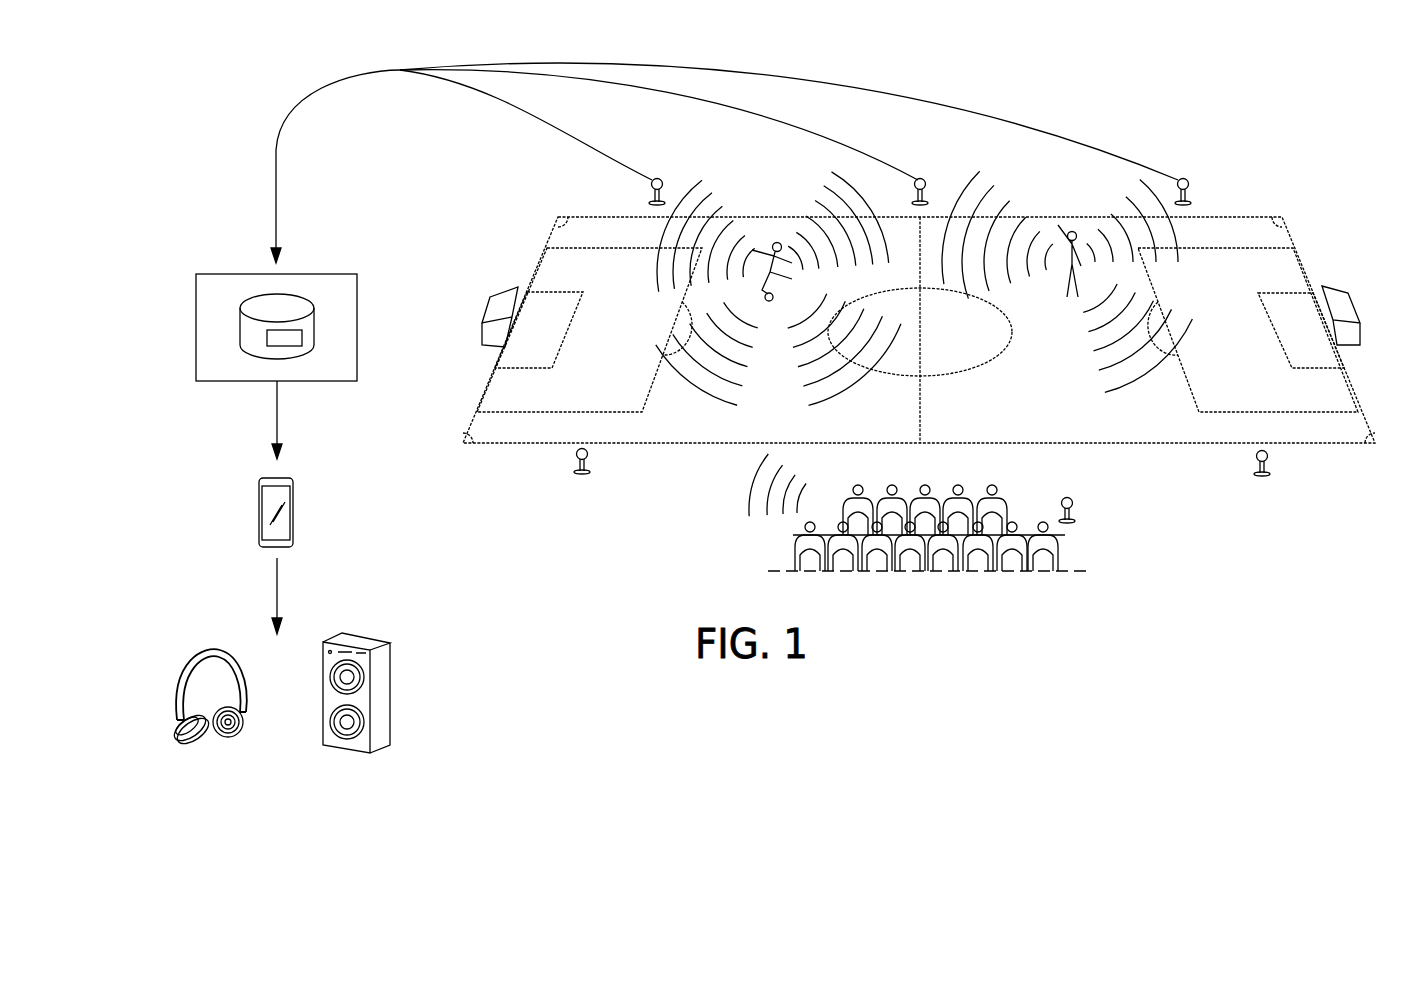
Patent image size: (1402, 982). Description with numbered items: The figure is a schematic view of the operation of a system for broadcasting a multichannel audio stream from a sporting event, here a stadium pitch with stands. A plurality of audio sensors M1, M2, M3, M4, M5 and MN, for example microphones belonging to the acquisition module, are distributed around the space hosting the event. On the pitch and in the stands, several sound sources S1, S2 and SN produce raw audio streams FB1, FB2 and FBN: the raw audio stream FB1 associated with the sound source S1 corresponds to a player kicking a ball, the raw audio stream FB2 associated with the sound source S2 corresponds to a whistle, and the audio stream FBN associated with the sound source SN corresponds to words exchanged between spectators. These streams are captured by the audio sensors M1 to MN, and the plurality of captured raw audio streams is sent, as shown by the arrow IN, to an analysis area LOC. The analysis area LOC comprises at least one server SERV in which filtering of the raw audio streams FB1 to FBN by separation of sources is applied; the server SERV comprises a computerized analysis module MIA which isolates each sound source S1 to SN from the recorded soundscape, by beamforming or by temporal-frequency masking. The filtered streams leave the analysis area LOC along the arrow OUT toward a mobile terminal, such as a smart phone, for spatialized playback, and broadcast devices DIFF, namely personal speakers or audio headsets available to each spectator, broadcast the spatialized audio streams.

The analysis area LOC is at (223, 272).
The server SERV is at (240, 330).
The computerized analysis module MIA is at (267, 339).
The transmission arrow IN is at (293, 206).
The output arrow OUT is at (306, 420).
The broadcast devices DIFF is at (330, 753).
The audio sensor M1 is at (660, 177).
The audio sensor M2 is at (923, 177).
The audio sensor M3 is at (1186, 177).
The audio sensor M4 is at (574, 471).
The audio sensor M5 is at (1270, 473).
The audio sensor MN is at (1073, 512).
The sound source S1 is at (778, 243).
The sound source S2 is at (1073, 232).
The sound source SN is at (1022, 533).
The raw audio stream FB1 is at (773, 272).
The raw audio stream FB2 is at (1070, 262).
The raw audio stream FBN is at (855, 485).